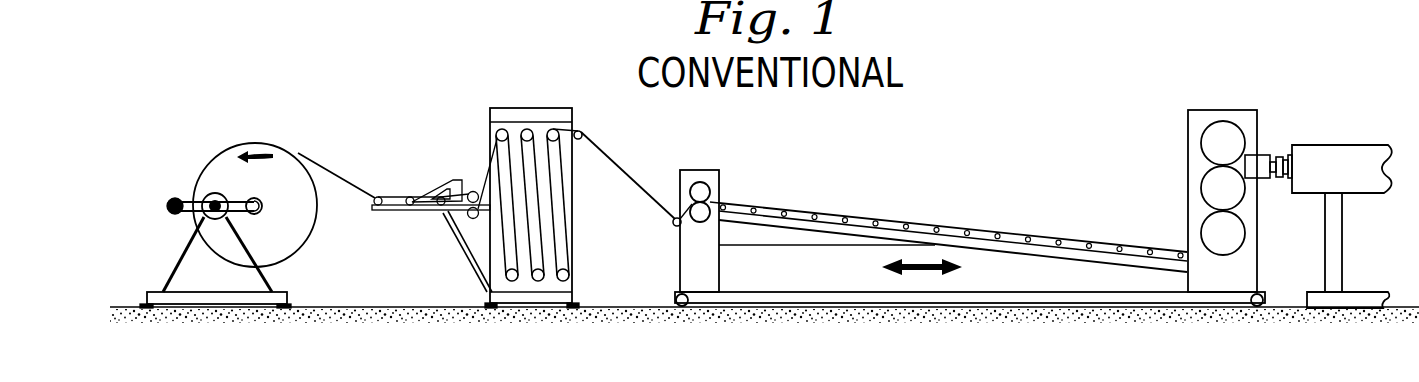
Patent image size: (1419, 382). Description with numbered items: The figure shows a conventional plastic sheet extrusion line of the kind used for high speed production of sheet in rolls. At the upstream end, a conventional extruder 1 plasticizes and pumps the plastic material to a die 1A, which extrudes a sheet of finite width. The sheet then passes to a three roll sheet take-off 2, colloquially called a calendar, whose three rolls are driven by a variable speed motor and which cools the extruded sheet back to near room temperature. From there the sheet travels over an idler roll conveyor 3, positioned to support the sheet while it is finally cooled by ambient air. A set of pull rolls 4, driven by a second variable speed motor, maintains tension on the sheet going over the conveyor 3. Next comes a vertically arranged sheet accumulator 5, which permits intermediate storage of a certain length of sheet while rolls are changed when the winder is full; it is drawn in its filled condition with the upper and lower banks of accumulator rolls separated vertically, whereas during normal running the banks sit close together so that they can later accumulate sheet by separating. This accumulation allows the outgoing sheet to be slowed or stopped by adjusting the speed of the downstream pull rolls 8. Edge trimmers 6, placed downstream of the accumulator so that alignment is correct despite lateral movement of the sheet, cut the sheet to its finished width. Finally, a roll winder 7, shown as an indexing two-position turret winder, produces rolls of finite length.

The extruder 1 is at (1335, 160).
The die 1A is at (1260, 160).
The three roll sheet take-off 2 is at (1228, 137).
The idler roll conveyor 3 is at (970, 243).
The set of pull rolls 4 is at (713, 213).
The vertically arranged sheet accumulator 5 is at (566, 142).
The edge trimmers 6 is at (429, 161).
The roll winder 7 is at (237, 208).
The downstream pull rolls 8 is at (472, 220).